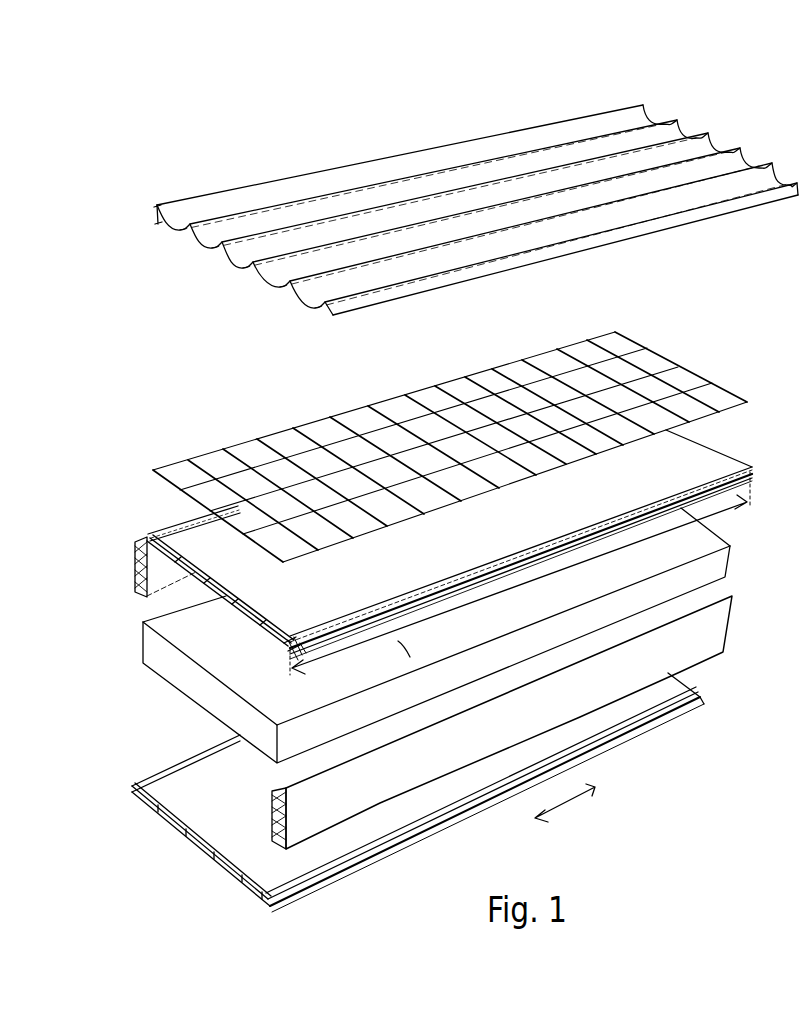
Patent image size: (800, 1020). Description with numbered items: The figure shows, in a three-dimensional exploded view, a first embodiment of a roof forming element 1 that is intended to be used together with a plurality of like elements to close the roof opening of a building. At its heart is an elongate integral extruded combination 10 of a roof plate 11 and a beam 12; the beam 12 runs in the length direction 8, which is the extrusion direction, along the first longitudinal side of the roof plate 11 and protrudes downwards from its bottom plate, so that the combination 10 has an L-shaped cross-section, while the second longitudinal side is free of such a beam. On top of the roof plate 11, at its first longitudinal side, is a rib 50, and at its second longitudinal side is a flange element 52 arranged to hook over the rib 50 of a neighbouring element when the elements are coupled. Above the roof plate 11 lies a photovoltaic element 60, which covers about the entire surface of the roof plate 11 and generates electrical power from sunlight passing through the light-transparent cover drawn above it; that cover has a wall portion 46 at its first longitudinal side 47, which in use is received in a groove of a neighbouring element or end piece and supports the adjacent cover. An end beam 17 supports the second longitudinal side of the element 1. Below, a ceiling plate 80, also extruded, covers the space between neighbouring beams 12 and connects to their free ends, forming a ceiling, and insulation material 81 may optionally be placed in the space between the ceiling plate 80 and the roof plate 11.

The roof forming element 1 is at (166, 120).
The wall portion 46 is at (152, 220).
The first longitudinal side 47 is at (666, 106).
The photovoltaic element 60 is at (724, 358).
The elongate integral extruded combination 10 is at (146, 500).
The roof plate 11 is at (268, 600).
The beam 12 is at (122, 545).
The rib 50 is at (178, 532).
The flange element 52 is at (752, 471).
The insulation material 81 is at (246, 671).
The end beam 17 is at (708, 641).
The ceiling plate 80 is at (230, 827).
The length direction 8 is at (562, 806).